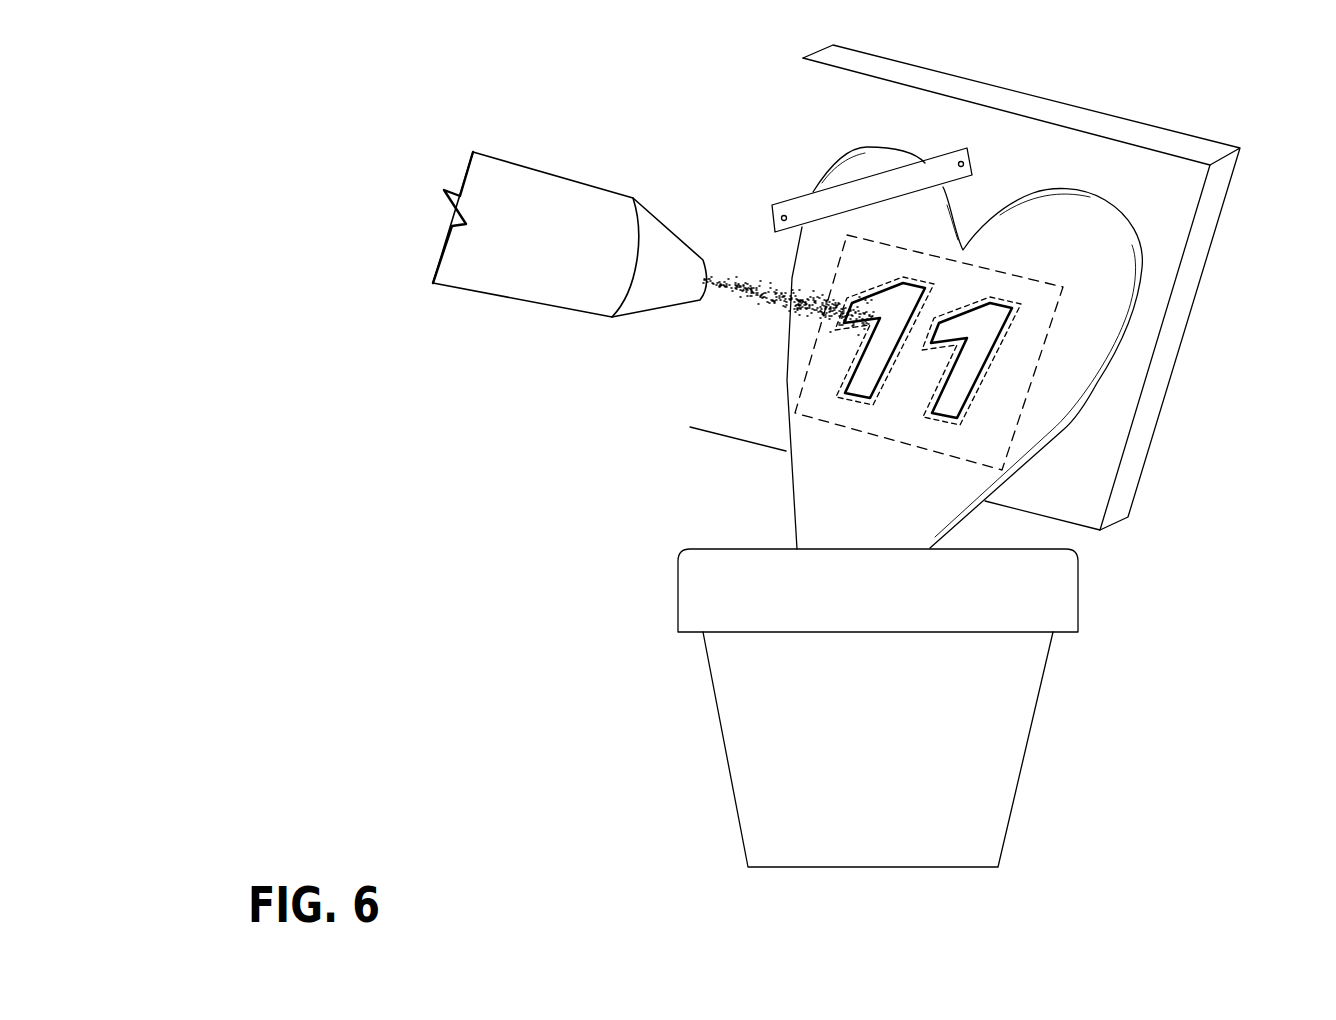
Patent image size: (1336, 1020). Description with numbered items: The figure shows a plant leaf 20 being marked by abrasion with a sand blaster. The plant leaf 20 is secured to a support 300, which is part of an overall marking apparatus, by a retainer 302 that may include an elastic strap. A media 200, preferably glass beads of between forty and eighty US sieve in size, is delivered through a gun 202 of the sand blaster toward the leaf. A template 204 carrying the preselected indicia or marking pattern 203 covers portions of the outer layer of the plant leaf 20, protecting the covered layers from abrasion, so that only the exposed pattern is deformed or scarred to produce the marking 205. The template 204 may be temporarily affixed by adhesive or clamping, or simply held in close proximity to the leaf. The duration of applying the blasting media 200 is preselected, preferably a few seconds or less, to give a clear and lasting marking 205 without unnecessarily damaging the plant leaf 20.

The plant leaf 20 is at (1159, 277).
The blasting media 200 is at (760, 283).
The gun 202 is at (672, 247).
The marking pattern 203 is at (987, 377).
The template 204 is at (1021, 306).
The marking 205 is at (990, 352).
The support 300 is at (1093, 138).
The retainer 302 is at (888, 192).